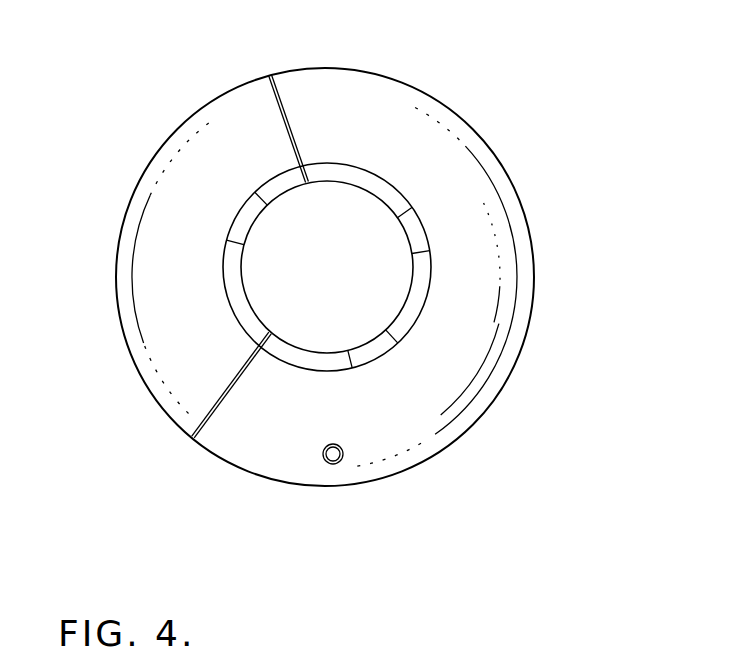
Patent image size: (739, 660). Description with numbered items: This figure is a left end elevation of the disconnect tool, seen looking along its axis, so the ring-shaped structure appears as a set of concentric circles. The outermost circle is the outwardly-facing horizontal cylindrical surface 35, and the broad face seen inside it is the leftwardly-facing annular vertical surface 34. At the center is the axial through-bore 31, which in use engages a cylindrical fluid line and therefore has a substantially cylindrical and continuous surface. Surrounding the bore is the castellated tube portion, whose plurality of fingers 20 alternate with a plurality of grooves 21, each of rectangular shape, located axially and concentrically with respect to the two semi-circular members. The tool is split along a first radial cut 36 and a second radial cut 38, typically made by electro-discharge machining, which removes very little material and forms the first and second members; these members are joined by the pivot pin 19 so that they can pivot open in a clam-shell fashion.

The pivot pin 19 is at (343, 457).
The fingers 20 is at (417, 302).
The grooves 21 is at (415, 232).
The axial through-bore 31 is at (388, 323).
The leftwardly-facing annular vertical surface 34 is at (406, 146).
The outwardly-facing horizontal cylindrical surface 35 is at (490, 100).
The first radial cut 36 is at (270, 75).
The second radial cut 38 is at (193, 440).